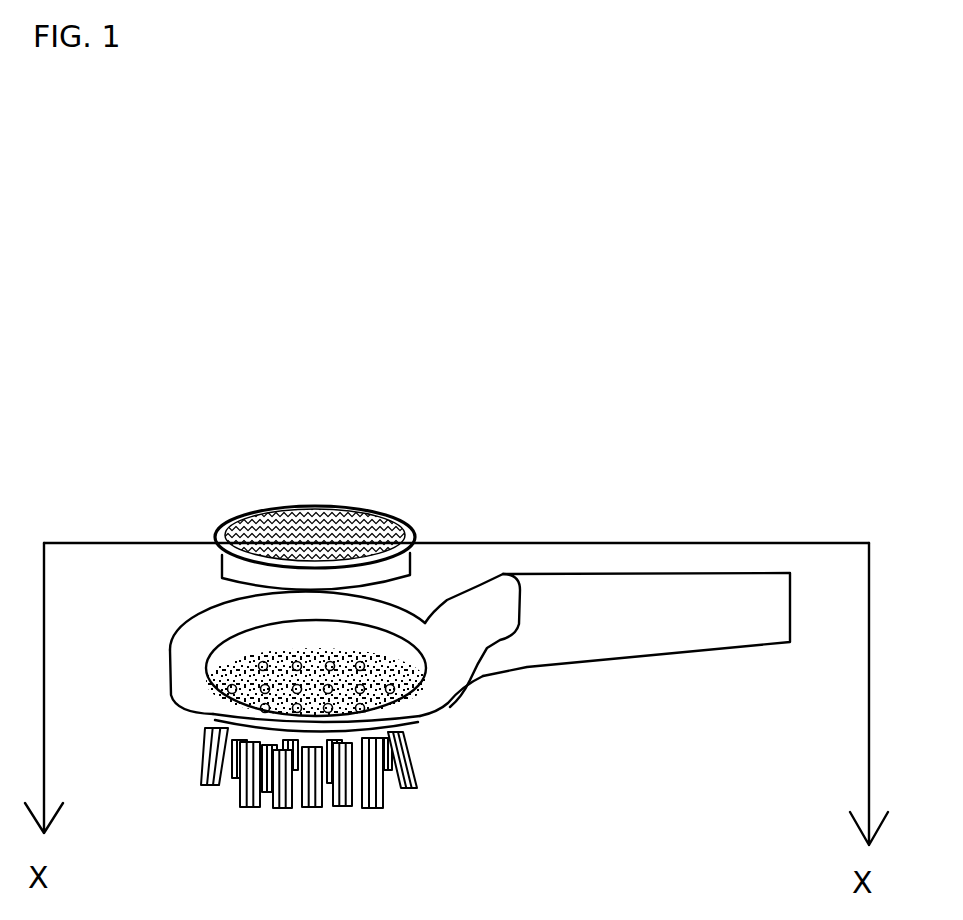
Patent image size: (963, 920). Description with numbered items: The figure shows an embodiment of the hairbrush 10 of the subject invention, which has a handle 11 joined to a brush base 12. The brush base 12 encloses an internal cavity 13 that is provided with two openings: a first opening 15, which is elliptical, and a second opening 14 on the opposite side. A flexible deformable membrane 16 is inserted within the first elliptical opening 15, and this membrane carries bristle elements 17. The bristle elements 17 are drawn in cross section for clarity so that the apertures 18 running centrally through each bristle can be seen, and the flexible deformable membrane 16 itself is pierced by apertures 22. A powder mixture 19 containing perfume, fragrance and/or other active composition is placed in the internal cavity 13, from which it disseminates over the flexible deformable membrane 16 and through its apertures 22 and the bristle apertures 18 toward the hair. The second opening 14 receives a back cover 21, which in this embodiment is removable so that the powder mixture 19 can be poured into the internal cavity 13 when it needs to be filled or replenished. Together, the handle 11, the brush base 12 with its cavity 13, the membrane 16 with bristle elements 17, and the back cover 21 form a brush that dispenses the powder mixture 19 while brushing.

The hairbrush 10 is at (468, 423).
The handle 11 is at (650, 627).
The brush base 12 is at (418, 703).
The internal cavity 13 is at (440, 686).
The second opening 14 is at (412, 617).
The first opening 15 is at (413, 722).
The flexible deformable membrane 16 is at (203, 718).
The bristle elements 17 is at (203, 778).
The apertures 18 is at (378, 808).
The powder mixture 19 is at (273, 653).
The back cover 21 is at (216, 541).
The apertures in the flexible deformable membrane 22 is at (330, 692).